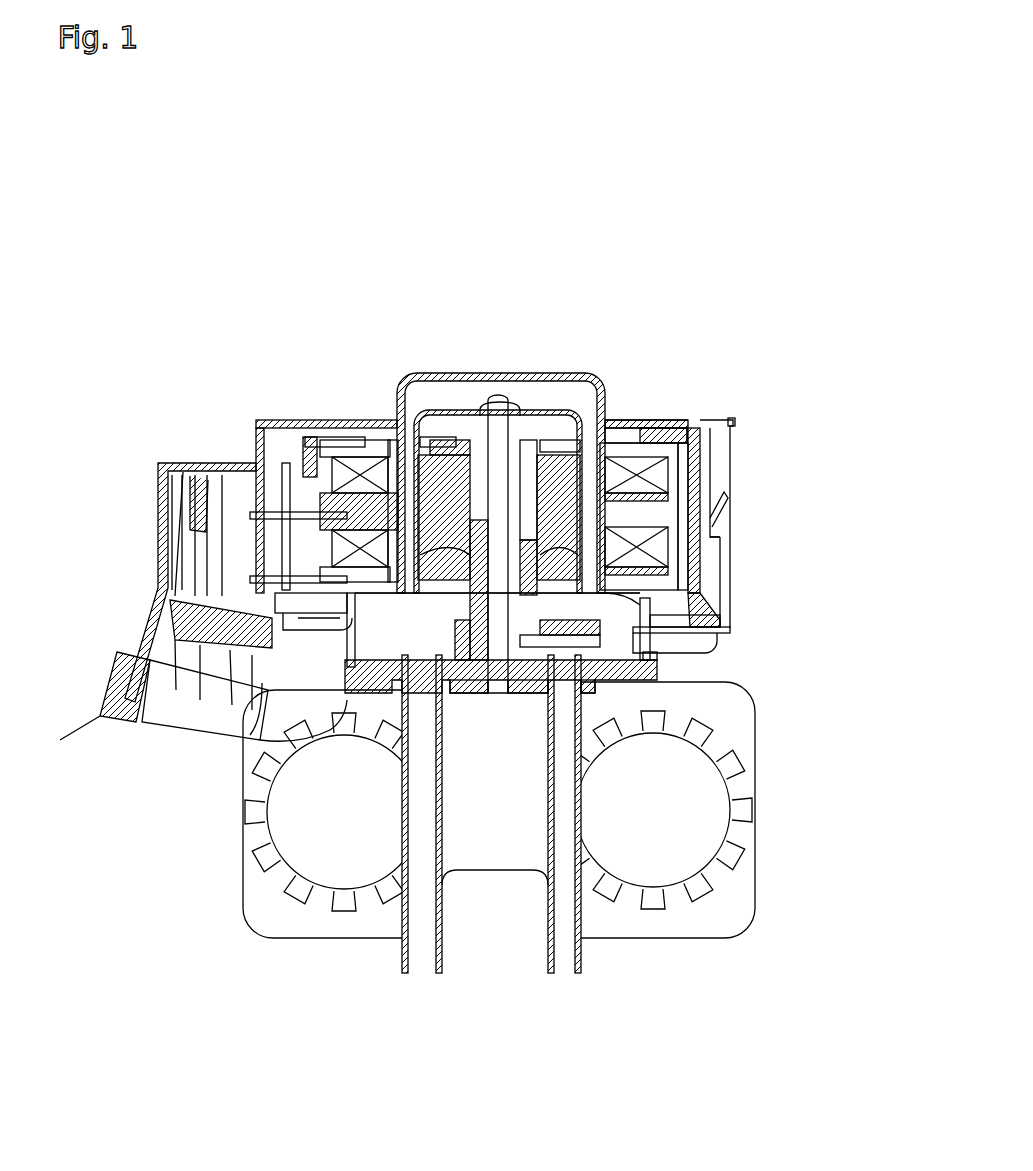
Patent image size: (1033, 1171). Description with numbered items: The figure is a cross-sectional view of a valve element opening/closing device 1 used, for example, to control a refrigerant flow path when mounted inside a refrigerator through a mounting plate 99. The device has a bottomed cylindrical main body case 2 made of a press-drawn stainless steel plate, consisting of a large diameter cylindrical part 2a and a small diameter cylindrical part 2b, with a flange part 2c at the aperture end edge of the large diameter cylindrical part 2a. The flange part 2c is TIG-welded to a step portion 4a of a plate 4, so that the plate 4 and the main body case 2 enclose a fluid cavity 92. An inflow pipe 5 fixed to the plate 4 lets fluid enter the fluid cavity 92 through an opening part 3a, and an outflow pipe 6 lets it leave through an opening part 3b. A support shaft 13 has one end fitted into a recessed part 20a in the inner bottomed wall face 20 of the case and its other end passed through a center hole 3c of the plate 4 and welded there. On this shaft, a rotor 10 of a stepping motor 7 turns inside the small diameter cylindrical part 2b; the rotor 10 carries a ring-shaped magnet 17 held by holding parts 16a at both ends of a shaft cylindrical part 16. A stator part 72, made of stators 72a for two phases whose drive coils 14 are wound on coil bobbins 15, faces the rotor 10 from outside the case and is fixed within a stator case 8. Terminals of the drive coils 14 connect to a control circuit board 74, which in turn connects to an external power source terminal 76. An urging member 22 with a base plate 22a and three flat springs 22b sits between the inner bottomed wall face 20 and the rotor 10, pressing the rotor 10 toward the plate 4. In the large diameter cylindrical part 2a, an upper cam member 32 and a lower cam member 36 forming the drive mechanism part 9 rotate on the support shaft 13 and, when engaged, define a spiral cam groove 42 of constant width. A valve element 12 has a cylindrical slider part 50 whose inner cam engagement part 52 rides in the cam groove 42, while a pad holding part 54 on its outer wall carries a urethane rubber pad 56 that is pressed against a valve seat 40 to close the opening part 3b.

The valve element opening/closing device 1 is at (285, 322).
The main body case 2 is at (548, 408).
The large diameter cylindrical part 2a is at (730, 640).
The small diameter cylindrical part 2b is at (700, 480).
The flange part 2c is at (657, 670).
The opening part 3a is at (360, 738).
The opening part 3b is at (548, 680).
The center hole 3c is at (478, 690).
The plate 4 is at (348, 680).
The step portion 4a is at (660, 680).
The inflow pipe 5 is at (402, 960).
The outflow pipe 6 is at (581, 945).
The stepping motor 7 is at (632, 412).
The stator case 8 is at (655, 430).
The drive mechanism part 9 is at (468, 612).
The rotor 10 is at (397, 420).
The valve element 12 is at (641, 626).
The support shaft 13 is at (510, 430).
The drive coils 14 is at (320, 470).
The coil bobbins 15 is at (690, 445).
The shaft cylindrical part 16 is at (378, 422).
The holding parts 16a is at (578, 440).
The magnet 17 is at (605, 418).
The inner bottomed wall face 20 is at (560, 415).
The recessed part 20a is at (500, 405).
The urging member 22 is at (478, 445).
The base plate 22a is at (465, 448).
The flat springs 22b is at (433, 437).
The upper cam member 32 is at (330, 518).
The lower cam member 36 is at (350, 665).
The valve seat 40 is at (650, 650).
The cam groove 42 is at (453, 625).
The slider part 50 is at (348, 602).
The cam engagement part 52 is at (700, 598).
The pad holding part 54 is at (725, 500).
The pad 56 is at (665, 625).
The stator part 72 is at (733, 420).
The stators 72a is at (735, 420).
The control circuit board 74 is at (278, 495).
The external power source terminal 76 is at (130, 722).
The fluid cavity 92 is at (340, 668).
The mounting plate 99 is at (735, 903).